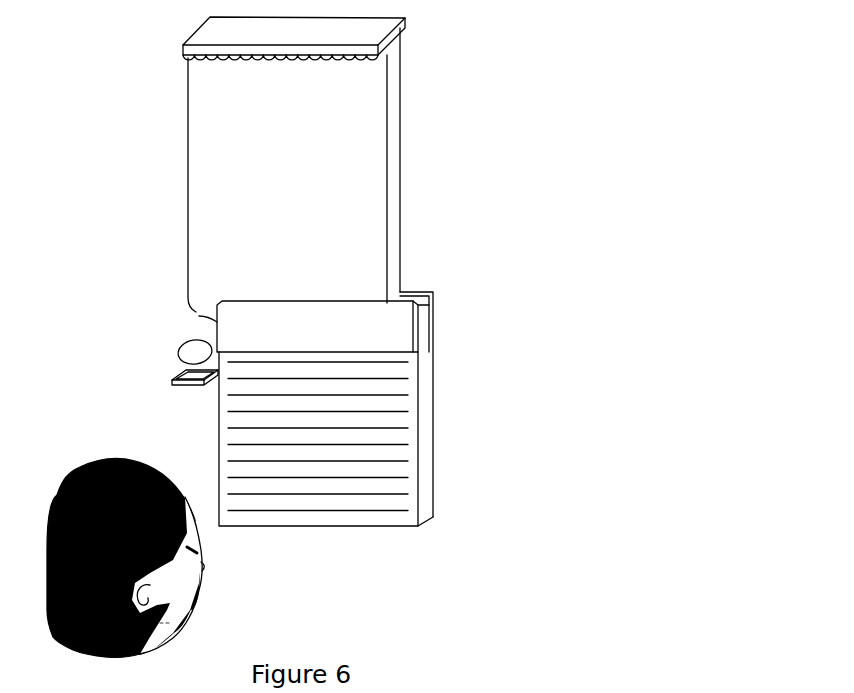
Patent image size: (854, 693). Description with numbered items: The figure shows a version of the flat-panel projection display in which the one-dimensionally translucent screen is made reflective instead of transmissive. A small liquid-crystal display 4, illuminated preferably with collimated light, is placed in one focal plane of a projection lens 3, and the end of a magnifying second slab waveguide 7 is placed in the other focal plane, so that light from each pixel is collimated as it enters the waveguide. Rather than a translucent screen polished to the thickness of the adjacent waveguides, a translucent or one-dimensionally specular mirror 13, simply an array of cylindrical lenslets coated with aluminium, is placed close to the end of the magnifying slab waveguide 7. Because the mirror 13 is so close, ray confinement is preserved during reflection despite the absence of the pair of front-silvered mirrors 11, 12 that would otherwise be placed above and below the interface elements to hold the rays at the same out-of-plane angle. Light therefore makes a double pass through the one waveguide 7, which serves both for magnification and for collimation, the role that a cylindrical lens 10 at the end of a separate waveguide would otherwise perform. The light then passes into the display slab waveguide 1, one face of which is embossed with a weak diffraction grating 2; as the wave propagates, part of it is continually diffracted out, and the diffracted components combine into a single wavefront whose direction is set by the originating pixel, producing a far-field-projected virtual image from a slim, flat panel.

The slab waveguide 1 is at (374, 487).
The weak diffraction grating 2 is at (386, 522).
The lens 3 is at (170, 360).
The liquid-crystal display 4 is at (168, 394).
The second slab waveguide 7 is at (408, 124).
The cylindrical lens 10 is at (195, 314).
The front-silvered mirror 11 is at (433, 327).
The front-silvered mirror 12 is at (448, 308).
The one-dimensionally translucent mirror 13 is at (410, 27).